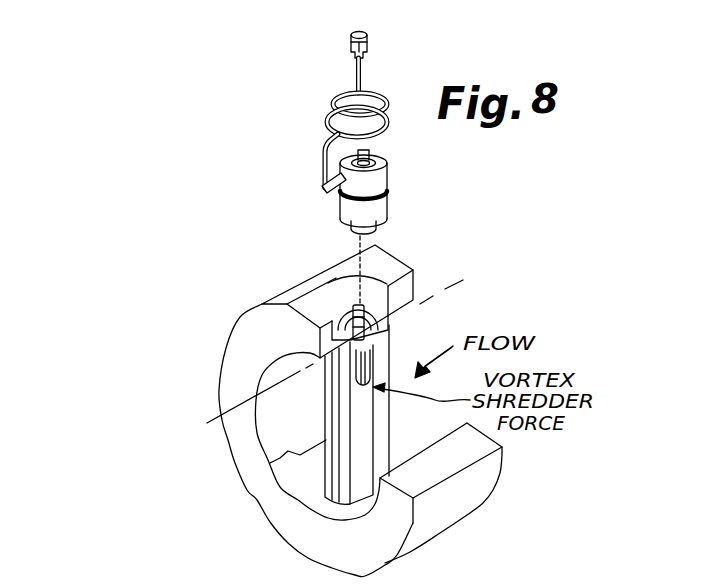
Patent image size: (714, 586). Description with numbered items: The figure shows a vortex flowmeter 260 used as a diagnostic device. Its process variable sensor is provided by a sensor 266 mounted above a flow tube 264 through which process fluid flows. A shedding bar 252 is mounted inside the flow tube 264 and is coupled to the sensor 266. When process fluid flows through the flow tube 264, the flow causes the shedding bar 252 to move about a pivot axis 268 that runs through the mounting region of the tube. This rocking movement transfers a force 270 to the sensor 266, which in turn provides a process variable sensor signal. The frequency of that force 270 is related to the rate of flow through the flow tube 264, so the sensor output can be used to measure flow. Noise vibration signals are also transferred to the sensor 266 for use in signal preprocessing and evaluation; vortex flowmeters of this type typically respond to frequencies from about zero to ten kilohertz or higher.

The vortex flowmeter 260 is at (253, 183).
The sensor 266 is at (388, 191).
The force 270 is at (349, 298).
The pivot axis 268 is at (234, 420).
The shedder bar 252 is at (283, 457).
The flow tube 264 is at (468, 500).